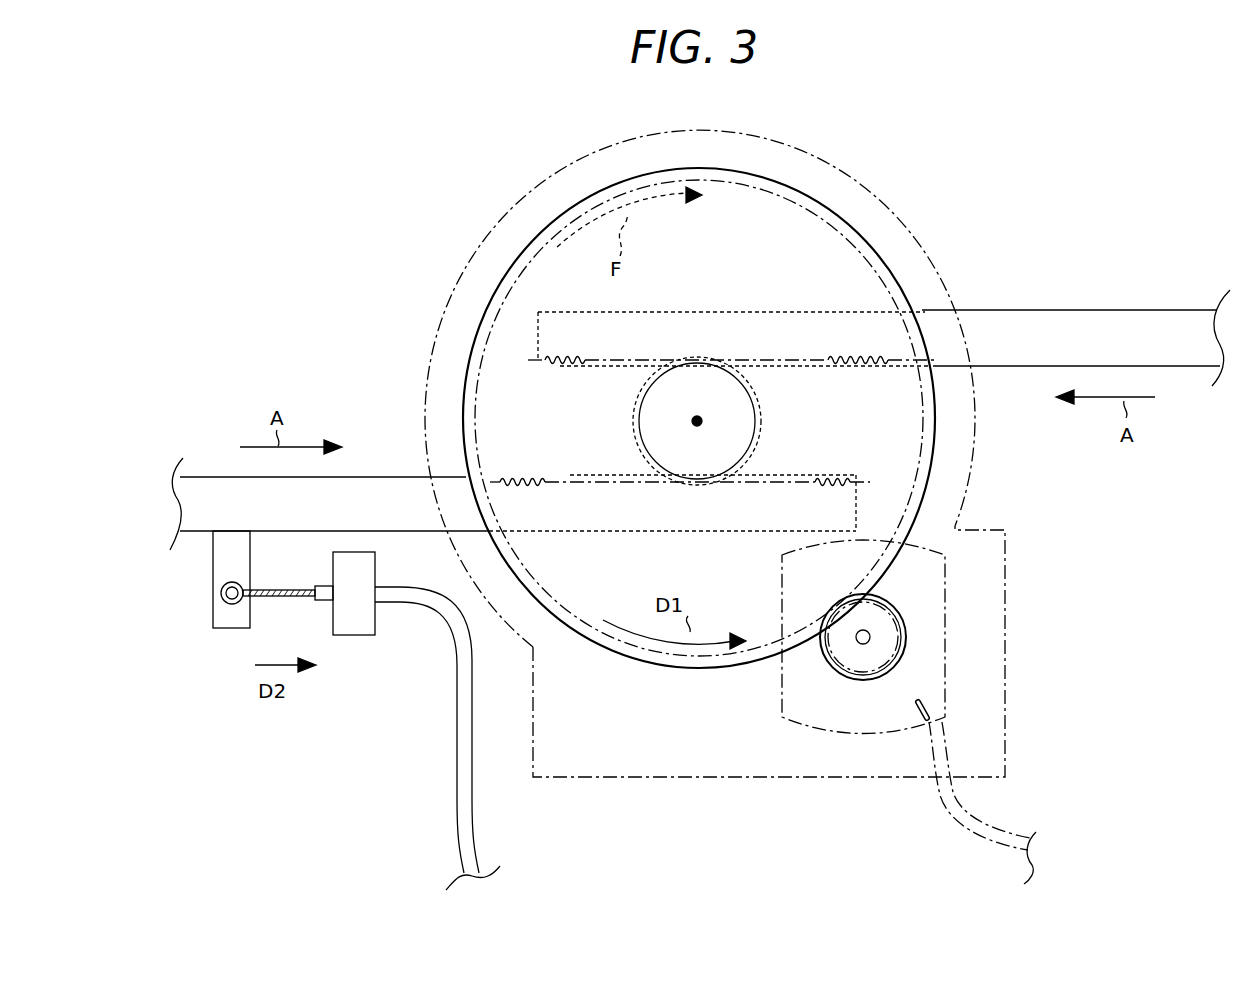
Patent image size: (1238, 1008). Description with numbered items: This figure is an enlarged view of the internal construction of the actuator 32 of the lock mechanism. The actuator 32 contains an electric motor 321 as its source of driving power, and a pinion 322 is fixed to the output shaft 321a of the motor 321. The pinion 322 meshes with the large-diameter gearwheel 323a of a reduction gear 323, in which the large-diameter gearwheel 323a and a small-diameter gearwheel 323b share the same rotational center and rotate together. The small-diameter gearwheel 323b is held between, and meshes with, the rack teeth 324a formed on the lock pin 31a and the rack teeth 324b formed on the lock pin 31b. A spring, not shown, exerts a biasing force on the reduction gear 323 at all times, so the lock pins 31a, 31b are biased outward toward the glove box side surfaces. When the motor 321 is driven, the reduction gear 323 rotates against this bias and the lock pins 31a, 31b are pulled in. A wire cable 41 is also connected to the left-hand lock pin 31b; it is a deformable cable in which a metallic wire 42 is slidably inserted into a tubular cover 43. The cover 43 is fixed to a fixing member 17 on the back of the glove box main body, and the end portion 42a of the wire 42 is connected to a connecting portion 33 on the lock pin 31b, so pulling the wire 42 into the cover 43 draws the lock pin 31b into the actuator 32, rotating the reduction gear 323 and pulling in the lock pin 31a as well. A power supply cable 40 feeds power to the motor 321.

The fixing member 17 is at (356, 636).
The lock pin 31a is at (1075, 310).
The lock pin 31b is at (212, 475).
The actuator 32 is at (812, 779).
The connecting portion 33 is at (213, 580).
The power supply cable 40 is at (965, 822).
The wire cable 41 is at (472, 652).
The wire 42 is at (285, 589).
The end portion 42a is at (222, 598).
The cover 43 is at (472, 797).
The electric motor 321 is at (948, 568).
The output shaft 321a is at (861, 645).
The pinion 322 is at (906, 627).
The reduction gear 323 is at (548, 226).
The large-diameter gearwheel 323a is at (812, 198).
The small-diameter gearwheel 323b is at (762, 404).
The rack teeth 324a is at (558, 367).
The rack teeth 324b is at (838, 483).